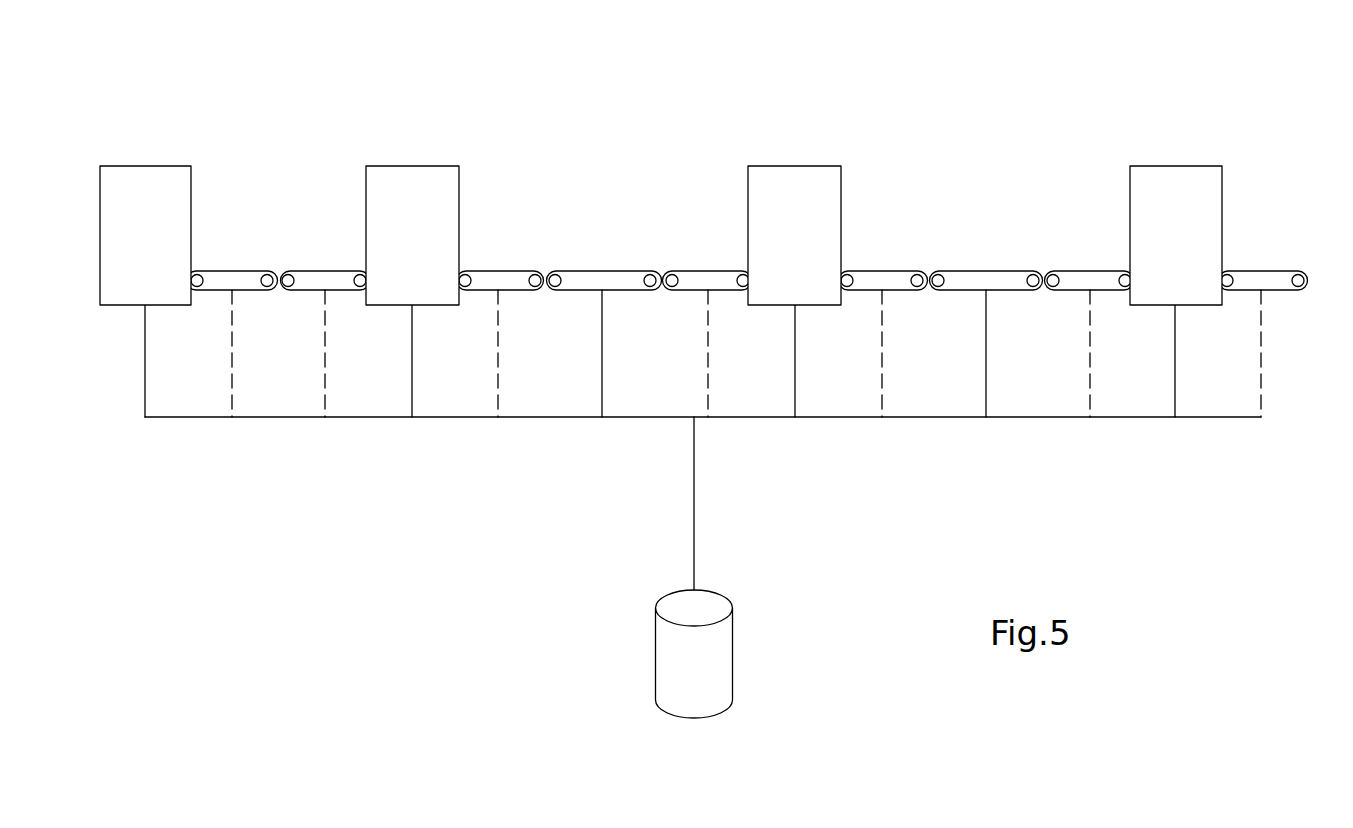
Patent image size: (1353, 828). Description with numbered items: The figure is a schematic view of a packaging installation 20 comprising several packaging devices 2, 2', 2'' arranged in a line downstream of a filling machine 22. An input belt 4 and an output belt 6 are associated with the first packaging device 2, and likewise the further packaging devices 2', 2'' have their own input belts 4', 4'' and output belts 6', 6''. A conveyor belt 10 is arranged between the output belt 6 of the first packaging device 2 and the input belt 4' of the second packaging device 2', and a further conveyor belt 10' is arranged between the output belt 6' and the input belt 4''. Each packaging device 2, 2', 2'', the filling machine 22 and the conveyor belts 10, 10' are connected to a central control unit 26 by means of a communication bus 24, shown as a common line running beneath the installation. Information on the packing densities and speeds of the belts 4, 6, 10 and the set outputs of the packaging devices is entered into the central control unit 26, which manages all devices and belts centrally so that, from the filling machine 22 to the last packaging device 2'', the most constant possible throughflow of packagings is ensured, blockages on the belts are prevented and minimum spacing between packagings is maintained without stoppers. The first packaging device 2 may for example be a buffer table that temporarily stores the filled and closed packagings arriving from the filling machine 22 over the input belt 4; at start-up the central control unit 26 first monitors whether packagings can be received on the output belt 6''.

The packaging installation 20 is at (705, 90).
The filling machine 22 is at (160, 246).
The packaging device 2 is at (412, 235).
The packaging device 2' is at (794, 235).
The packaging device 2'' is at (1176, 235).
The input belt 4 is at (325, 250).
The input belt 4' is at (707, 250).
The input belt 4'' is at (1089, 250).
The output belt 6 is at (500, 250).
The output belt 6' is at (883, 250).
The output belt 6'' is at (1263, 250).
The conveyor belt 10 is at (604, 250).
The conveyor belt 10' is at (986, 250).
The communication bus 24 is at (697, 515).
The central control unit 26 is at (713, 663).